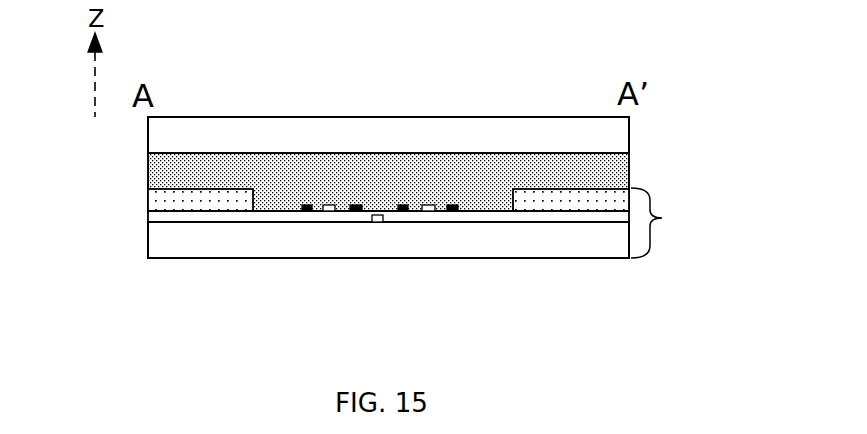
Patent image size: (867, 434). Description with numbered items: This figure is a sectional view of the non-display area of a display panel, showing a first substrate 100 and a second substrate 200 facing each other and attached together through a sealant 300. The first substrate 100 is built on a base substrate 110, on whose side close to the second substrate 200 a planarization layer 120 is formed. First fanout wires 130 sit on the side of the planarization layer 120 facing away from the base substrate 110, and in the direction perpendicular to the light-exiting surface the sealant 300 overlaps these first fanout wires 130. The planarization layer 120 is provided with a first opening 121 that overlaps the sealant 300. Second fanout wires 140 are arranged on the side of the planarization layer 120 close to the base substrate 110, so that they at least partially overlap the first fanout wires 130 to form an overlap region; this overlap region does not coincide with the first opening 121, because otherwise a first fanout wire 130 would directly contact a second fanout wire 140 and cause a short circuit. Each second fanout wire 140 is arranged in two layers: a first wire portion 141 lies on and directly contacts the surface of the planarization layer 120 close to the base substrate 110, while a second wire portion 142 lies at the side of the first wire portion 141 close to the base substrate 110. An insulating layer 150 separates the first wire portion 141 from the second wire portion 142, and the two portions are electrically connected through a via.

The first substrate 100 is at (676, 223).
The base substrate 110 is at (173, 238).
The planarization layer 120 is at (173, 203).
The first opening 121 is at (514, 192).
The first fanout wire 130 is at (400, 212).
The second fanout wire 140 is at (339, 291).
The first wire portion 141 is at (325, 212).
The second wire portion 142 is at (373, 222).
The insulating layer 150 is at (197, 217).
The second substrate 200 is at (592, 139).
The sealant 300 is at (201, 172).